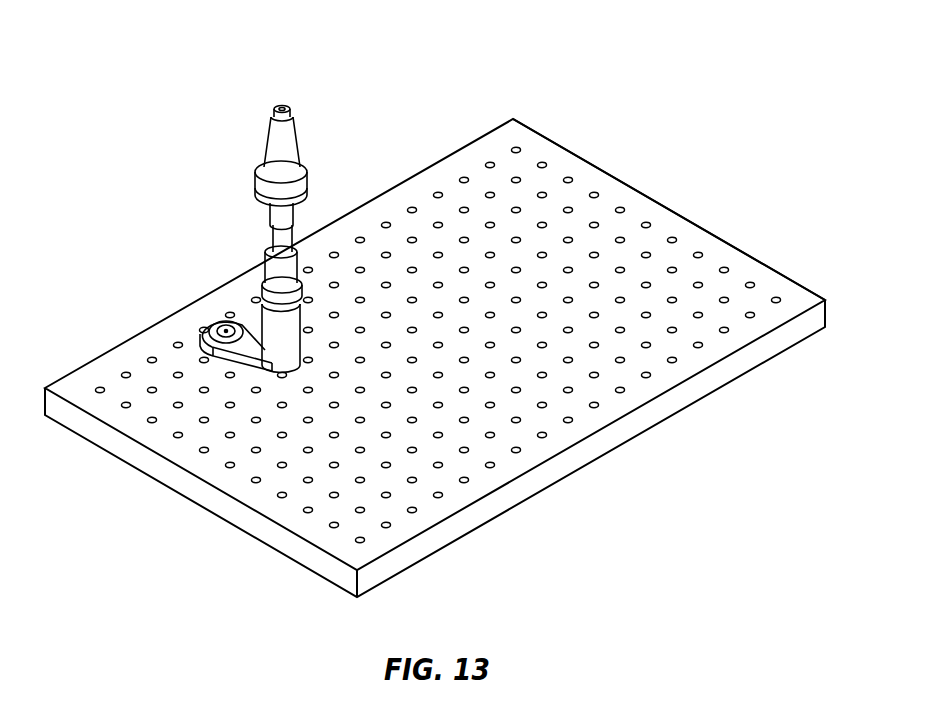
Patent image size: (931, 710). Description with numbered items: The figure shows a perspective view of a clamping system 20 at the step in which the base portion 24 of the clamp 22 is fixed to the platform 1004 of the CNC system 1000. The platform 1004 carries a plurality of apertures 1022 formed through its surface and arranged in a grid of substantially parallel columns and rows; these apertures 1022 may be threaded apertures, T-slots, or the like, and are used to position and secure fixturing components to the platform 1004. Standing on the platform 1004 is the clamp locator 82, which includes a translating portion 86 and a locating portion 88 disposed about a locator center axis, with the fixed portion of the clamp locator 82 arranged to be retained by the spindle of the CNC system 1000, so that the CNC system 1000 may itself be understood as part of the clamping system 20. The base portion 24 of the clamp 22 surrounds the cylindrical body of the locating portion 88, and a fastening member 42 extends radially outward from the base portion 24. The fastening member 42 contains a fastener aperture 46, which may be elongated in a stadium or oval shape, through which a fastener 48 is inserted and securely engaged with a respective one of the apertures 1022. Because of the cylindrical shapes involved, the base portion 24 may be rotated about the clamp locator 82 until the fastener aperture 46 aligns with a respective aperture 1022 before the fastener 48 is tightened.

The clamping system 20 is at (439, 313).
The clamp 22 is at (250, 260).
The base portion 24 is at (270, 327).
The fastening member 42 is at (227, 383).
The fastener aperture 46 is at (247, 348).
The fastener 48 is at (216, 329).
The clamp locator 82 is at (305, 142).
The translating portion 86 is at (287, 235).
The locating portion 88 is at (272, 270).
The CNC system 1000 is at (727, 400).
The platform 1004 is at (658, 200).
The apertures 1022 is at (516, 150).